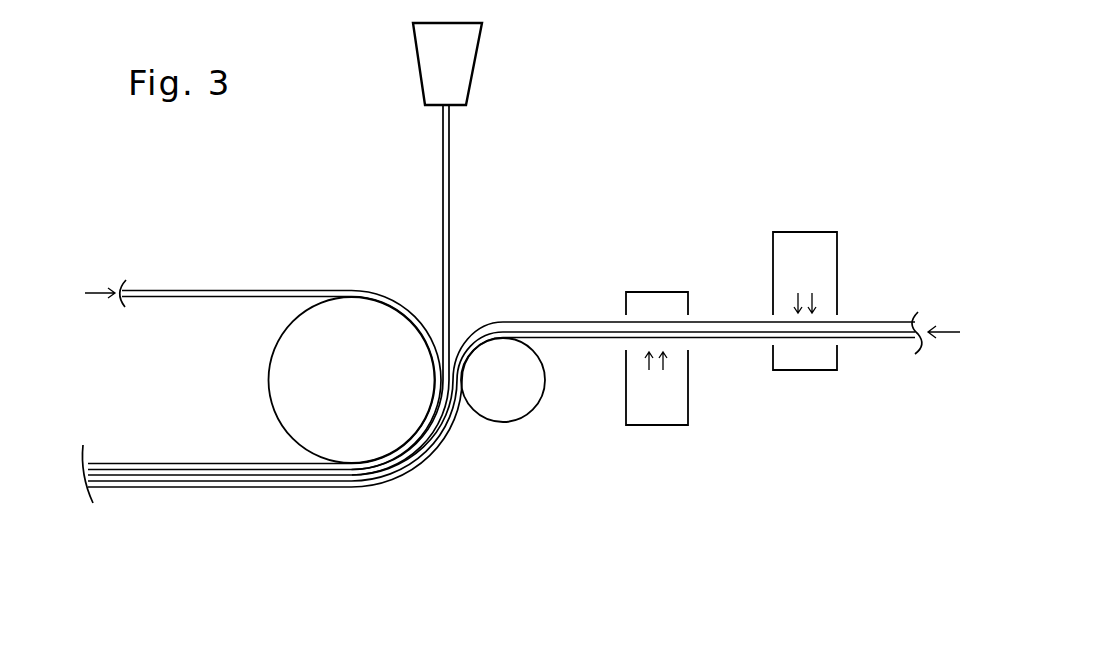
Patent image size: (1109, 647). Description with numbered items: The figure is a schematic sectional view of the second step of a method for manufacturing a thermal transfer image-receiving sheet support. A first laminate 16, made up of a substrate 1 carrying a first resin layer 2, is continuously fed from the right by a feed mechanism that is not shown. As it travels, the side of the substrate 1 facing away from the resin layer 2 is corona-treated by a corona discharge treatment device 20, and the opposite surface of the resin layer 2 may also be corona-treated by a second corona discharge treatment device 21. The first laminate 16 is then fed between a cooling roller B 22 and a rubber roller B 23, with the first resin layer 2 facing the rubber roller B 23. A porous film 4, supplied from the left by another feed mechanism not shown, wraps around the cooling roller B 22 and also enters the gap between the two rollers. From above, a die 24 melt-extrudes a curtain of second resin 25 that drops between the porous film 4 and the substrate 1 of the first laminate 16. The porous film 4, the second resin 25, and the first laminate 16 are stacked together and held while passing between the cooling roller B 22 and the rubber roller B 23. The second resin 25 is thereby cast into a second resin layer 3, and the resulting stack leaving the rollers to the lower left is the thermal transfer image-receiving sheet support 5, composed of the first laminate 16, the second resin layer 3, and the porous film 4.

The substrate 1 is at (900, 322).
The first resin layer 2 is at (905, 340).
The second resin layer 3 is at (92, 469).
The porous film 4 is at (175, 290).
The thermal transfer image-receiving sheet support 5 is at (179, 503).
The first laminate 16 is at (501, 388).
The corona discharge treatment device 20 is at (805, 232).
The corona discharge treatment device 21 is at (657, 292).
The cooling roller B 22 is at (290, 371).
The rubber roller B 23 is at (517, 402).
The die 24 is at (418, 60).
The second resin 25 is at (449, 172).